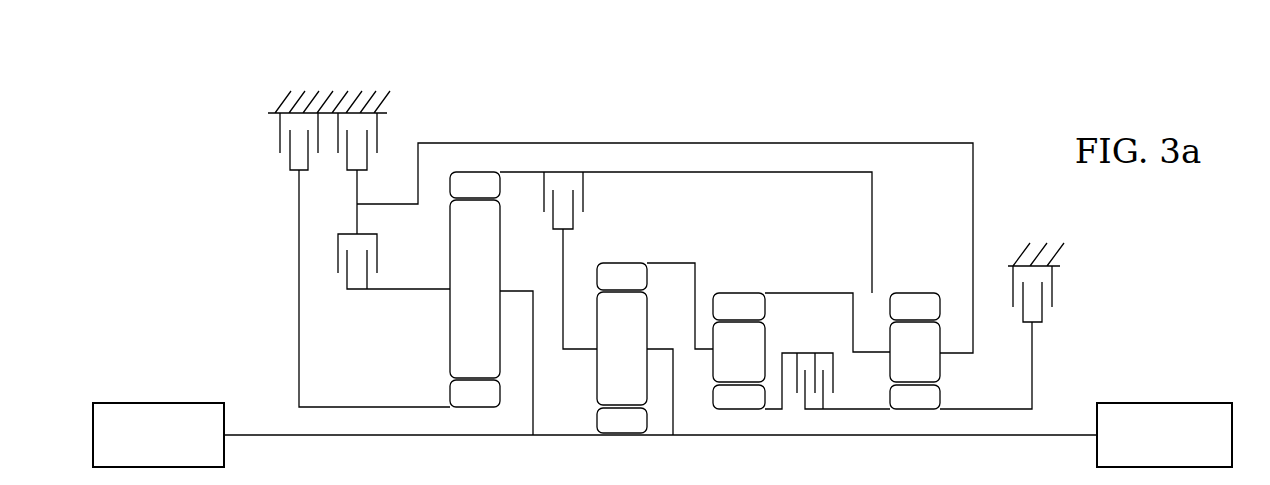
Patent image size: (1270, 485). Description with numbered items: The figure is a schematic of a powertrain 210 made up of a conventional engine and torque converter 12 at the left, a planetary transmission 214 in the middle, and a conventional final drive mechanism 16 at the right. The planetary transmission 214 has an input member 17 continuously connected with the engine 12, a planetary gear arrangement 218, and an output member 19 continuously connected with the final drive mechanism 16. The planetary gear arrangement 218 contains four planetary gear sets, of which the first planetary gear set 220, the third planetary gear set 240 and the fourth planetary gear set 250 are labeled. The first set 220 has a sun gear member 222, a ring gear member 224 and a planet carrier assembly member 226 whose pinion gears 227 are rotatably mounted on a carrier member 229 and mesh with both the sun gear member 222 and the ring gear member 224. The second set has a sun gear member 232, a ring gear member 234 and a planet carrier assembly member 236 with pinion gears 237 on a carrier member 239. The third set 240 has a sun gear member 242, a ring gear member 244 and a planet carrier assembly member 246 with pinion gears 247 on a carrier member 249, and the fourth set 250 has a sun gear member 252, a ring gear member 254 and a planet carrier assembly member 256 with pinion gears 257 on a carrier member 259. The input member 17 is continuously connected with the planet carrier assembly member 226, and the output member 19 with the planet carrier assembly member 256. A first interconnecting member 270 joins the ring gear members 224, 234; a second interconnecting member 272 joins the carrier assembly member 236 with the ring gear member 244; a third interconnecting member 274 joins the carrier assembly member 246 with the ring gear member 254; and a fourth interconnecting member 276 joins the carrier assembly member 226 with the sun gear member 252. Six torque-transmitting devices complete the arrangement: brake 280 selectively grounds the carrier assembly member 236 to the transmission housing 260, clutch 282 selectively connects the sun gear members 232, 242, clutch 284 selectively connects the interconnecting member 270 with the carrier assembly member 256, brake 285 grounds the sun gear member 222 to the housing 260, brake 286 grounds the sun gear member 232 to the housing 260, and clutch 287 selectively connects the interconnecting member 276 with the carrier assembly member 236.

The engine and torque converter 12 is at (147, 388).
The final drive mechanism 16 is at (1172, 388).
The input member 17 is at (250, 433).
The output member 19 is at (1065, 433).
The powertrain 210 is at (657, 90).
The planetary transmission 214 is at (714, 257).
The planetary gear arrangement 218 is at (873, 222).
The planetary gear set 220 is at (455, 325).
The sun gear member 222 is at (480, 412).
The ring gear member 224 is at (475, 185).
The planet carrier assembly member 226 is at (434, 312).
The pinion gears 227 is at (475, 289).
The carrier member 229 is at (424, 293).
The sun gear member 232 is at (915, 397).
The ring gear member 234 is at (915, 306).
The planet carrier assembly member 236 is at (950, 363).
The pinion gears 237 is at (915, 352).
The carrier member 239 is at (960, 355).
The planetary gear set 240 is at (714, 385).
The sun gear member 242 is at (728, 412).
The ring gear member 244 is at (739, 306).
The planet carrier assembly member 246 is at (703, 340).
The pinion gears 247 is at (739, 352).
The carrier member 249 is at (709, 353).
The planetary gear set 250 is at (733, 370).
The sun gear member 252 is at (615, 437).
The ring gear member 254 is at (622, 276).
The planet carrier assembly member 256 is at (587, 358).
The pinion gears 257 is at (622, 348).
The carrier member 259 is at (576, 352).
The transmission housing 260 is at (284, 97).
The first interconnecting member 270 is at (872, 208).
The second interconnecting member 272 is at (793, 292).
The third interconnecting member 274 is at (670, 262).
The fourth interconnecting member 276 is at (537, 300).
The brake 280 is at (392, 134).
The clutch 282 is at (797, 412).
The clutch 284 is at (559, 166).
The brake 285 is at (281, 162).
The brake 286 is at (1052, 318).
The clutch 287 is at (385, 264).